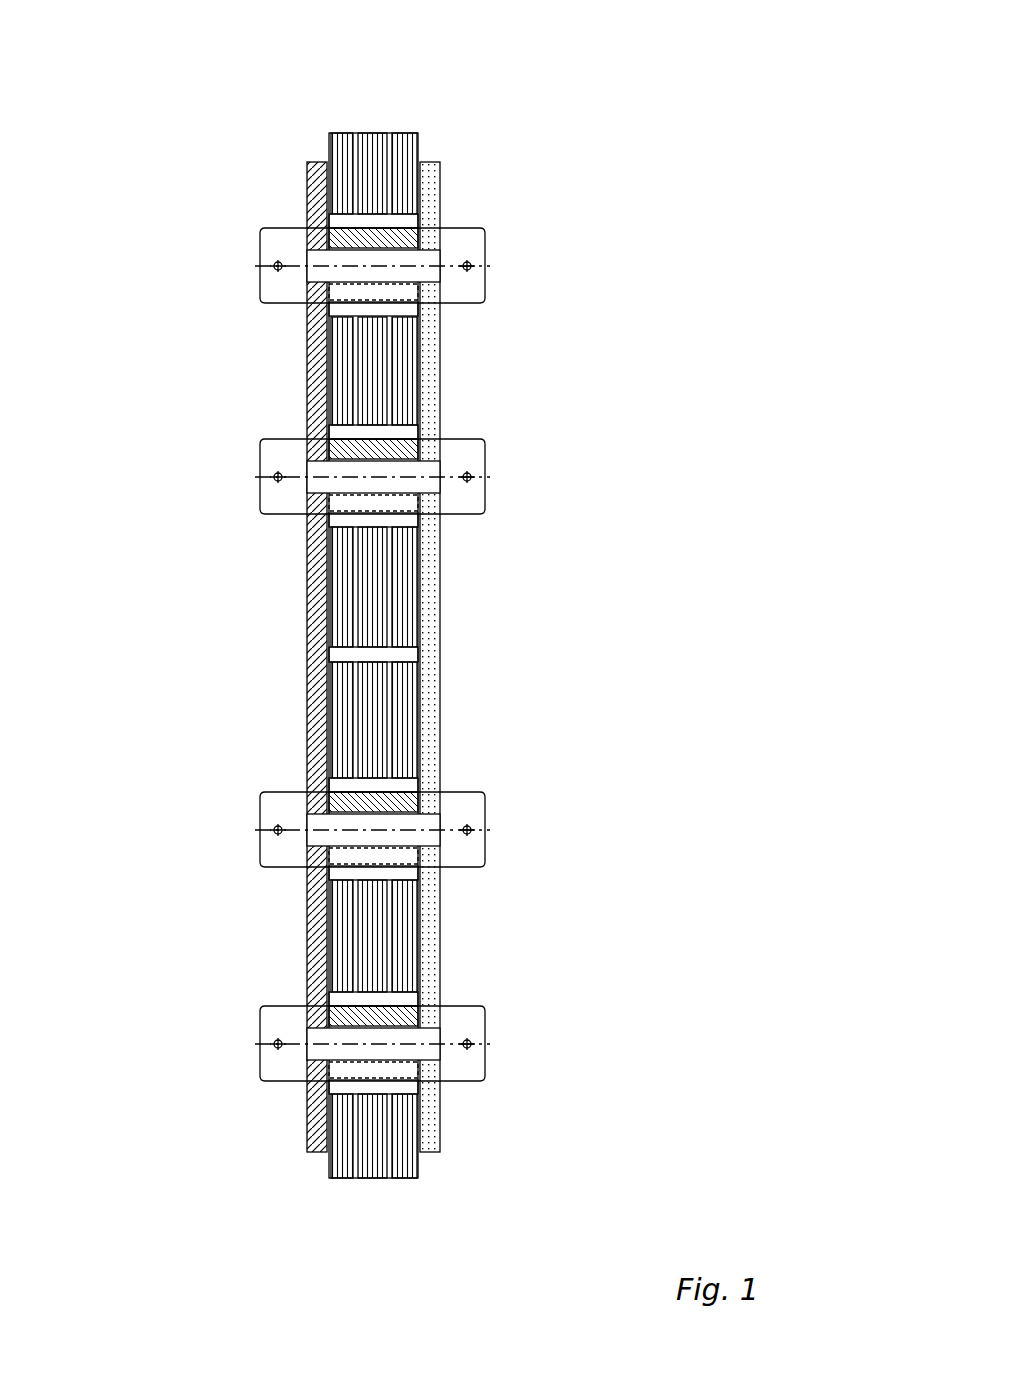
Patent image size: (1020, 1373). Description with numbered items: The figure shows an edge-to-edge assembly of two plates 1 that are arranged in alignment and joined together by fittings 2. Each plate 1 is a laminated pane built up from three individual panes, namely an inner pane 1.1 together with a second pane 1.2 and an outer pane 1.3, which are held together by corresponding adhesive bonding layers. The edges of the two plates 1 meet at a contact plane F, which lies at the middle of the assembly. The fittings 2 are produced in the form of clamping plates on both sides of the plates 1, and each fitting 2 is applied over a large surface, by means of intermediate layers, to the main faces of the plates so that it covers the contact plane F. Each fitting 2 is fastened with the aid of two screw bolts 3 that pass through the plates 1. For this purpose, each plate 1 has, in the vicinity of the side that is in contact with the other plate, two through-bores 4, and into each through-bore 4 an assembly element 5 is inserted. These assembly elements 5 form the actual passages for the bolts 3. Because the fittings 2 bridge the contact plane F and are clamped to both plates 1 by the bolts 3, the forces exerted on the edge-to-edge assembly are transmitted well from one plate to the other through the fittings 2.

The plate 1 is at (378, 624).
The inner pane 1.1 is at (375, 150).
The individual pane 1.2 is at (405, 135).
The outer pane 1.3 is at (338, 133).
The fitting 2 is at (318, 178).
The bolt 3 is at (465, 243).
The through-bore 4 is at (404, 420).
The assembly element 5 is at (406, 532).
The contact plane F is at (468, 652).